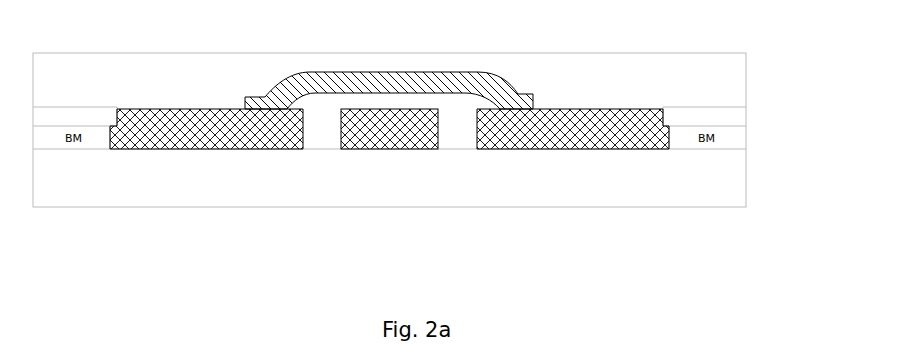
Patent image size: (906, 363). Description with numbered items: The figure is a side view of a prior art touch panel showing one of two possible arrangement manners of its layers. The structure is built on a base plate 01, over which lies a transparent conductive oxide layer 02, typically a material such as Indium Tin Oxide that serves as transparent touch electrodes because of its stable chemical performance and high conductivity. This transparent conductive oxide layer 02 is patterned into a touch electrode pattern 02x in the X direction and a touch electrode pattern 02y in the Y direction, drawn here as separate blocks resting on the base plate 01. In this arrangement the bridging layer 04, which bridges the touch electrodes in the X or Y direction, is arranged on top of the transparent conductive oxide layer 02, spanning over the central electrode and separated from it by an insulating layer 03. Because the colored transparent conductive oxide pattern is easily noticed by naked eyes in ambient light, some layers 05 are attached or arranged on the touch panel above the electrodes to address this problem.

The base plate 01 is at (707, 176).
The transparent conductive oxide layer 02 is at (389, 203).
The touch electrode pattern in the X direction 02x is at (250, 138).
The touch electrode pattern in the Y direction 02y is at (407, 178).
The insulating layer 03 is at (457, 113).
The bridging layer 04 is at (413, 84).
The layers 05 is at (610, 80).